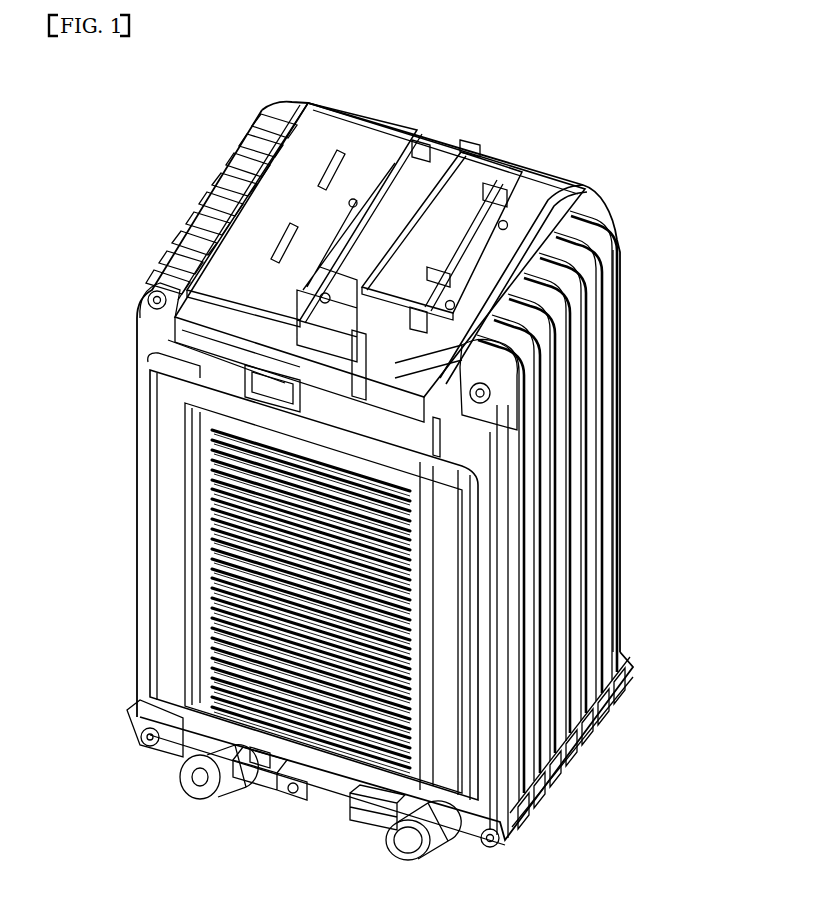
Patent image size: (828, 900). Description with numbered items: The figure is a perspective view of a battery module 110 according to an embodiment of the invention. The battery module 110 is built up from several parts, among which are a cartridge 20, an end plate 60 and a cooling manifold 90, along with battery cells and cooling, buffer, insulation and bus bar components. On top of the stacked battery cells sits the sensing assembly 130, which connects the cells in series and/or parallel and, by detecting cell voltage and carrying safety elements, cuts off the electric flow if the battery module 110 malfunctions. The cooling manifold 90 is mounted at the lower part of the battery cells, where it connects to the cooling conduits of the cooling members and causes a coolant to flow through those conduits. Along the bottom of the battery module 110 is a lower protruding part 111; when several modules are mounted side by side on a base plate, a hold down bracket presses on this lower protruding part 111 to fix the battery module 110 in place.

The battery module 110 is at (127, 133).
The sensing assembly 130 is at (482, 170).
The cartridge 20 is at (593, 507).
The lower protruding part 111 is at (625, 652).
The end plate 60 is at (167, 664).
The cooling manifold 90 is at (347, 817).